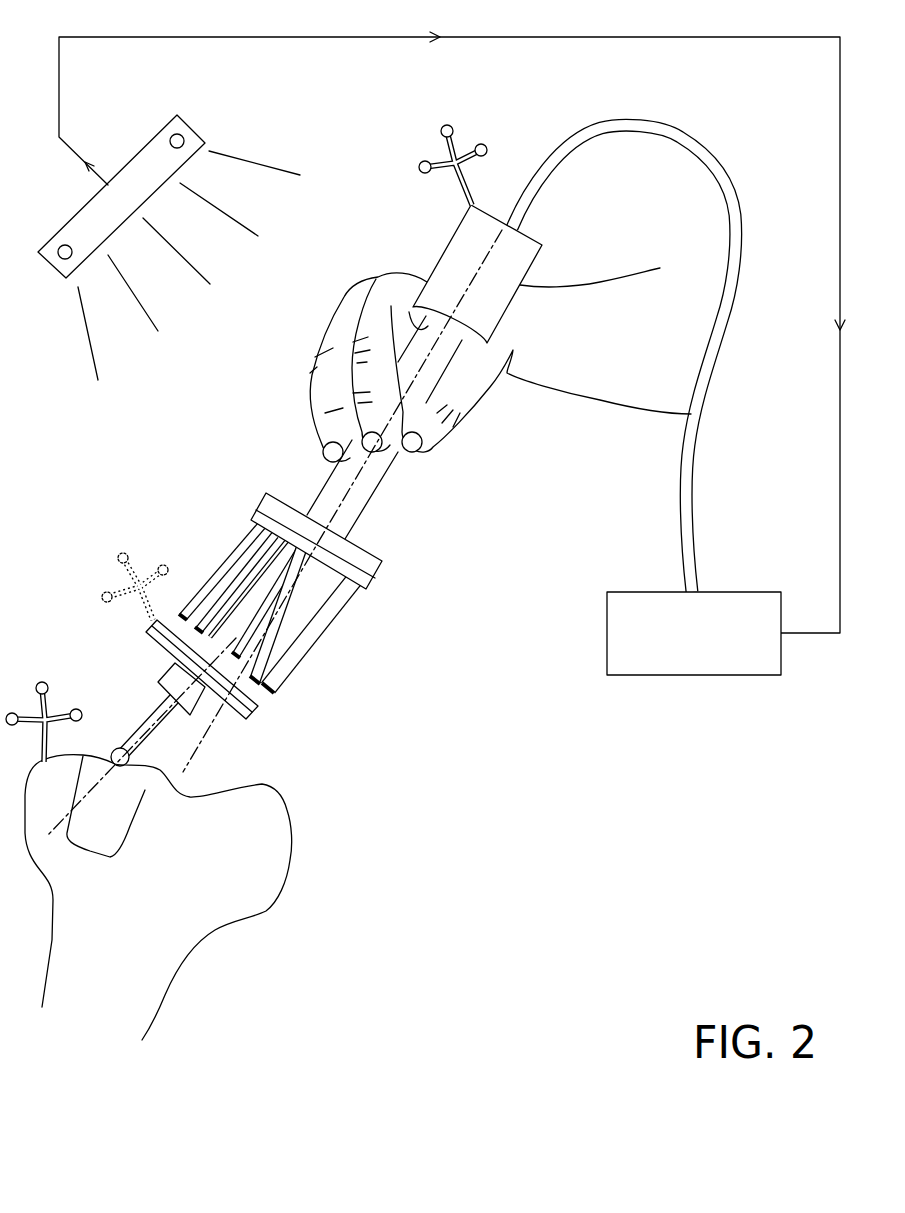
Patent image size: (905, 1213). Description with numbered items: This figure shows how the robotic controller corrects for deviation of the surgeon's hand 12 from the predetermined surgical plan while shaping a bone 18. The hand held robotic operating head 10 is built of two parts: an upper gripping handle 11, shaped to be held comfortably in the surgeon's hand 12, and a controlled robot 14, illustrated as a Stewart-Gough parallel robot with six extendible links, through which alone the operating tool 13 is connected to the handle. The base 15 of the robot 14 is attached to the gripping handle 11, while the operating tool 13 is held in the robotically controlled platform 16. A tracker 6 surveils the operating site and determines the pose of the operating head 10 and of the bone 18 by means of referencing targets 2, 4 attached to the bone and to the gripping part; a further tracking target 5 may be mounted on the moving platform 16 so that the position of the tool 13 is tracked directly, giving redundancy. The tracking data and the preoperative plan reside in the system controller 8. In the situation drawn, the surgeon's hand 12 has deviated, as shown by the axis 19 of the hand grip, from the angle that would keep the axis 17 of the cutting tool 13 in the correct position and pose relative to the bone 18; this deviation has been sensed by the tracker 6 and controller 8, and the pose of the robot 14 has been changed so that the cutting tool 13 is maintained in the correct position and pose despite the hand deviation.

The referencing target 2 is at (33, 703).
The referencing target 4 is at (479, 151).
The tracking target 5 is at (107, 597).
The tracker 6 is at (66, 224).
The system controller 8 is at (607, 634).
The hand held robotic operating head 10 is at (514, 535).
The gripping handle 11 is at (364, 503).
The hand 12 is at (415, 276).
The operating tool 13 is at (129, 760).
The controlled robot 14 is at (318, 633).
The base 15 is at (377, 569).
The robotically controlled platform 16 is at (248, 723).
The axis of the cutting tool 17 is at (152, 713).
The bone 18 is at (292, 871).
The axis of the hand grip 19 is at (204, 736).